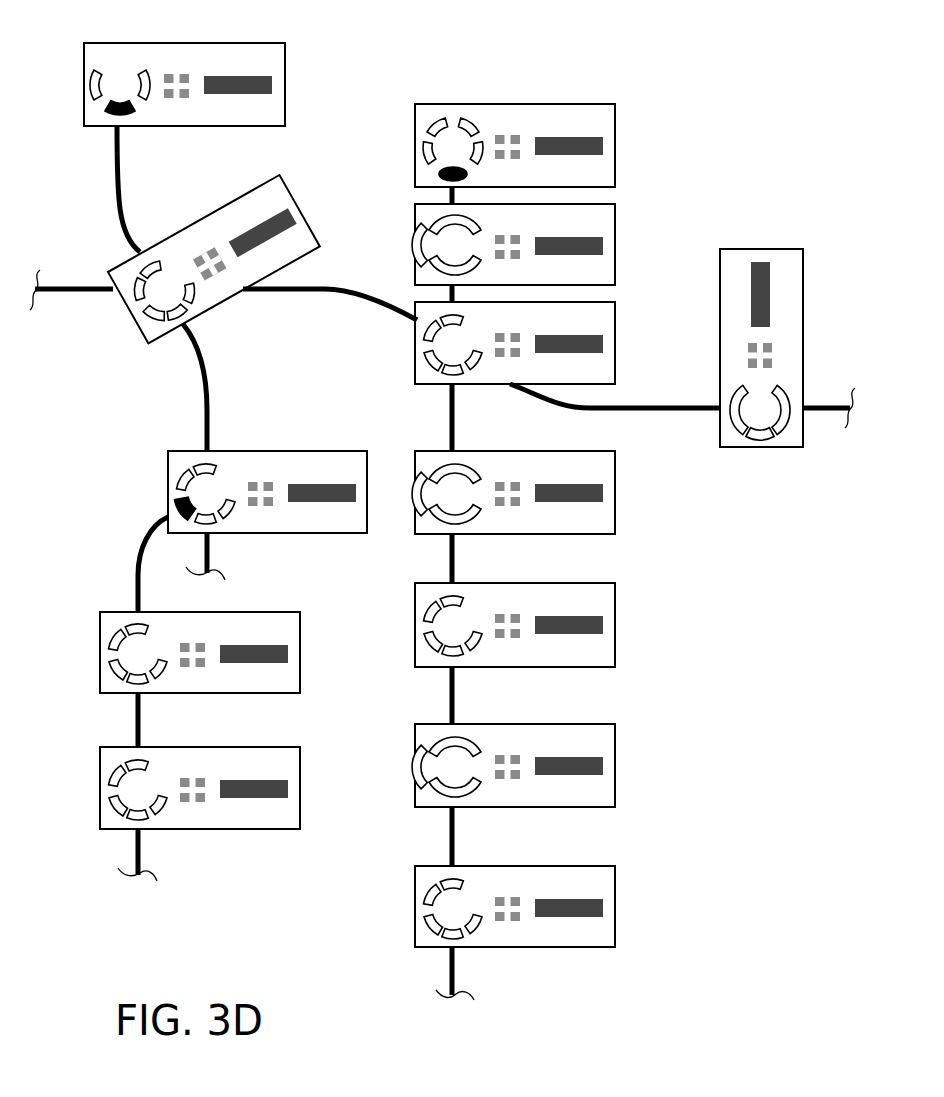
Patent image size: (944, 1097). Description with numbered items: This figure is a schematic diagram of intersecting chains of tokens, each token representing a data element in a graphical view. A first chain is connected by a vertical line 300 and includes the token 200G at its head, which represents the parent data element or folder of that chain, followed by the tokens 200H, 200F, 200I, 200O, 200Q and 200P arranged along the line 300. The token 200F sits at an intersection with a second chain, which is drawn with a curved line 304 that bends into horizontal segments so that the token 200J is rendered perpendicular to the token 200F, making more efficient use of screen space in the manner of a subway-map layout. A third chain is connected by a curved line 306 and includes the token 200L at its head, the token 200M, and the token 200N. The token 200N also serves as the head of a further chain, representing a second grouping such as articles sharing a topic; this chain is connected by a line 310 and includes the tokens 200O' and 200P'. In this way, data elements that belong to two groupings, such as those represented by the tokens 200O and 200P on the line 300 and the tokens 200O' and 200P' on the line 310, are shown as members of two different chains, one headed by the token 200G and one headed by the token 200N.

The token 200L is at (285, 62).
The token 200M is at (255, 185).
The token 200G is at (615, 125).
The token 200H is at (615, 225).
The token 200F is at (615, 320).
The token 200J is at (782, 249).
The token 200I is at (615, 510).
The token 200O is at (563, 614).
The token 200Q is at (615, 742).
The token 200P is at (562, 896).
The token 200N is at (167, 470).
The token 200O' is at (249, 640).
The token 200P' is at (247, 777).
The line 300 is at (450, 418).
The curved line 304 is at (365, 300).
The curved line 306 is at (207, 416).
The line 310 is at (138, 570).